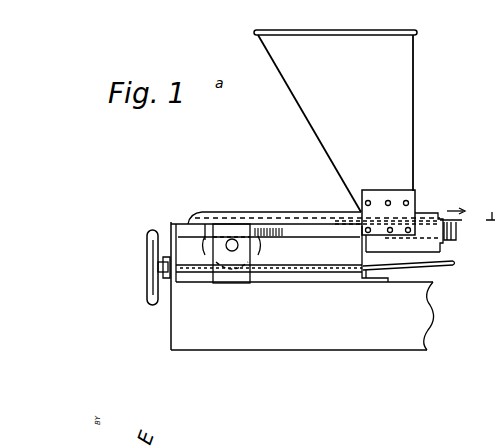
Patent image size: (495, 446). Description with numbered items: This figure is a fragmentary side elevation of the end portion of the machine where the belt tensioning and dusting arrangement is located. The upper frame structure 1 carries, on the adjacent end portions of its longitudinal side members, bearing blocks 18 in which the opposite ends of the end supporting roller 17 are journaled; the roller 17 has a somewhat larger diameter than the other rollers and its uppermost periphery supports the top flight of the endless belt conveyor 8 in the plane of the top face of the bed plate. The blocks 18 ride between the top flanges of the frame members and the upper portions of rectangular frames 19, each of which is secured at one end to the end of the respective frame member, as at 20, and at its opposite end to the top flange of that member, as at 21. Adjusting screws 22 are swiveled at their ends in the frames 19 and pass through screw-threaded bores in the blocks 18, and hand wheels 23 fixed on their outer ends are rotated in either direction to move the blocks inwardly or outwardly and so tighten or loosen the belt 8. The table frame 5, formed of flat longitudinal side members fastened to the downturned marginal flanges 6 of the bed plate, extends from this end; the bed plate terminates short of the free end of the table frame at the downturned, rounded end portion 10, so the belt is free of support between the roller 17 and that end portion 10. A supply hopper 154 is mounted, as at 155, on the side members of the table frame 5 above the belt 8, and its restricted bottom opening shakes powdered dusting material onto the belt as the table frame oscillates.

The upper frame structure 1 is at (300, 340).
The table frame 5 is at (434, 213).
The downturned marginal flanges 6 is at (467, 225).
The endless belt conveyor 8 is at (450, 216).
The end portion of bed plate 10 is at (373, 235).
The end supporting roller 17 is at (258, 246).
The bearing blocks 18 is at (232, 283).
The rectangular frames 19 is at (298, 218).
The frame securing point 20 is at (172, 322).
The frame securing point 21 is at (378, 285).
The adjusting screws 22 is at (308, 275).
The hand wheels 23 is at (152, 248).
The supply hopper 154 is at (407, 99).
The hopper mounting 155 is at (410, 203).